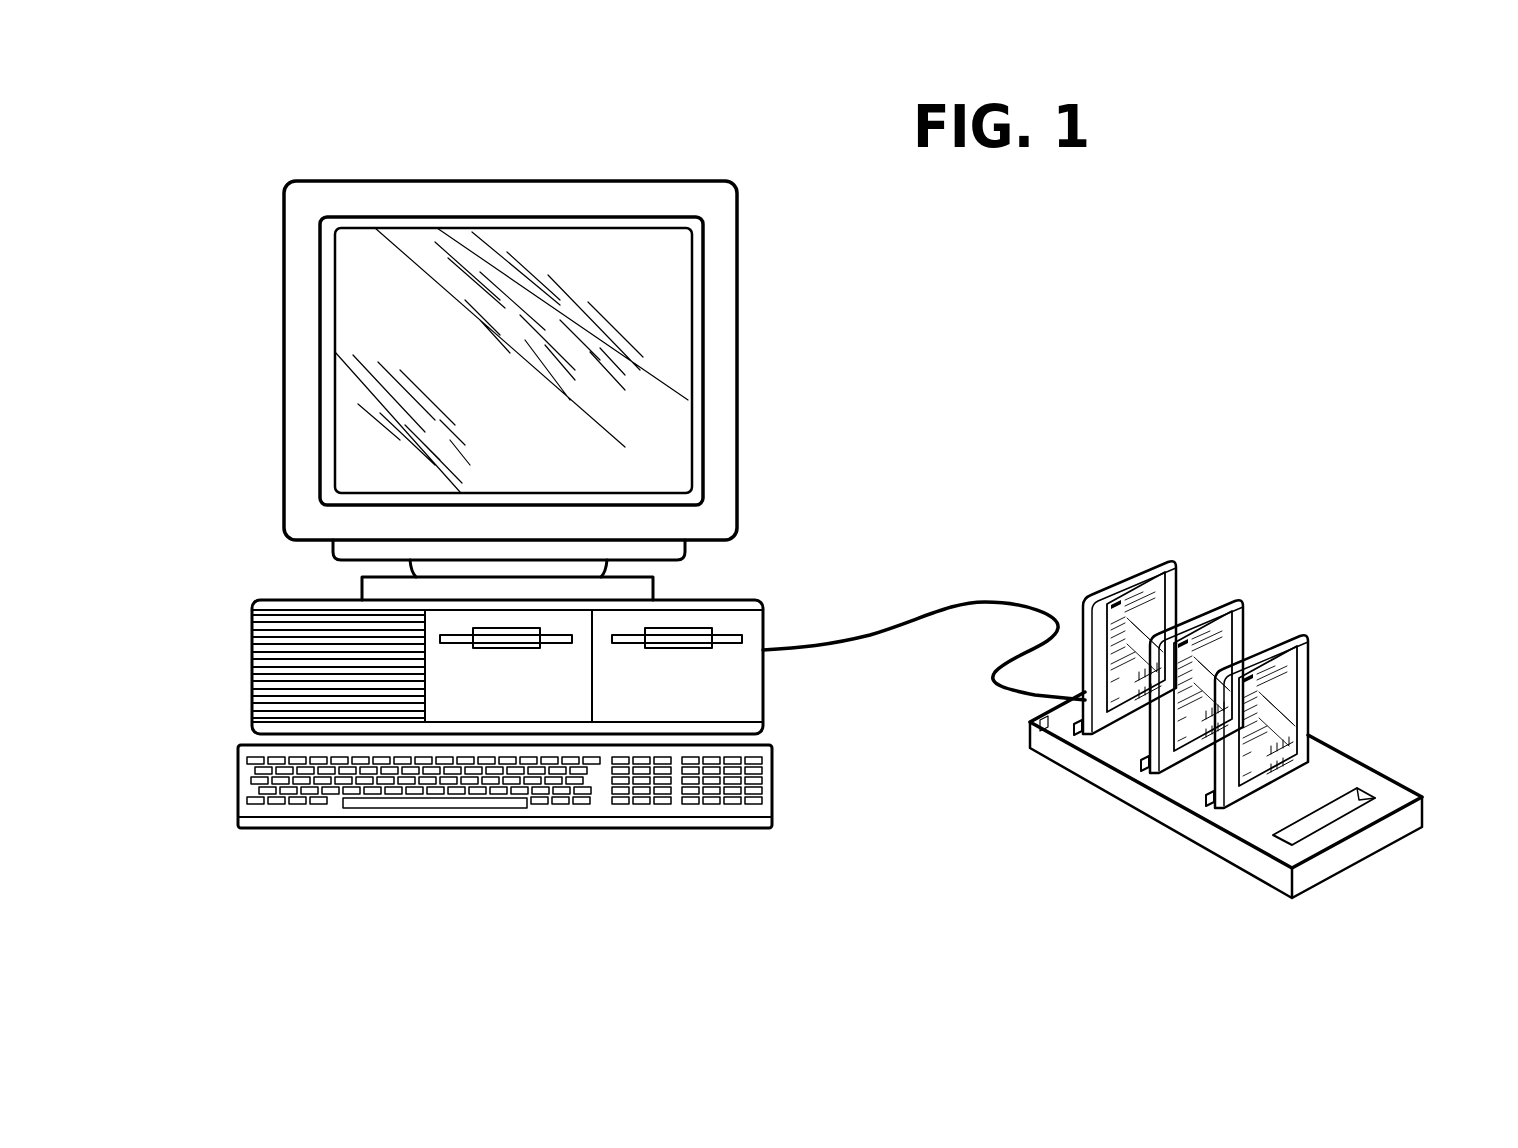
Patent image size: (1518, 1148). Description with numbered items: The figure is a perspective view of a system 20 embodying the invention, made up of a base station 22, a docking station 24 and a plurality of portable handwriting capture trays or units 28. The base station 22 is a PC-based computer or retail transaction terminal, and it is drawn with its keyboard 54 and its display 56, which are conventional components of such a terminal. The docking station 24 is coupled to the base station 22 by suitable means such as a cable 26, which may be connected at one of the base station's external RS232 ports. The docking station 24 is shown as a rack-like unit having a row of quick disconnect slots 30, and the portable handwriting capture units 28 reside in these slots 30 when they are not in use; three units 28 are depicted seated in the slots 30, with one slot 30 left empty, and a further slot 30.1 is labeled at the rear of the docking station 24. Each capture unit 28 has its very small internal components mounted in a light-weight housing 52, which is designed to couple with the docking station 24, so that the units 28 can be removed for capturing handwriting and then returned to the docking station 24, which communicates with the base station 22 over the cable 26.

The system 20 is at (897, 466).
The base station 22 is at (226, 680).
The docking station 24 is at (1408, 764).
The cable 26 is at (855, 645).
The portable handwriting capture trays or units 28 is at (1102, 568).
The quick disconnect slots 30 is at (1150, 774).
The first card slot 30.1 is at (1047, 756).
The housing 52 is at (1175, 562).
The keyboard 54 is at (416, 828).
The display 56 is at (637, 180).